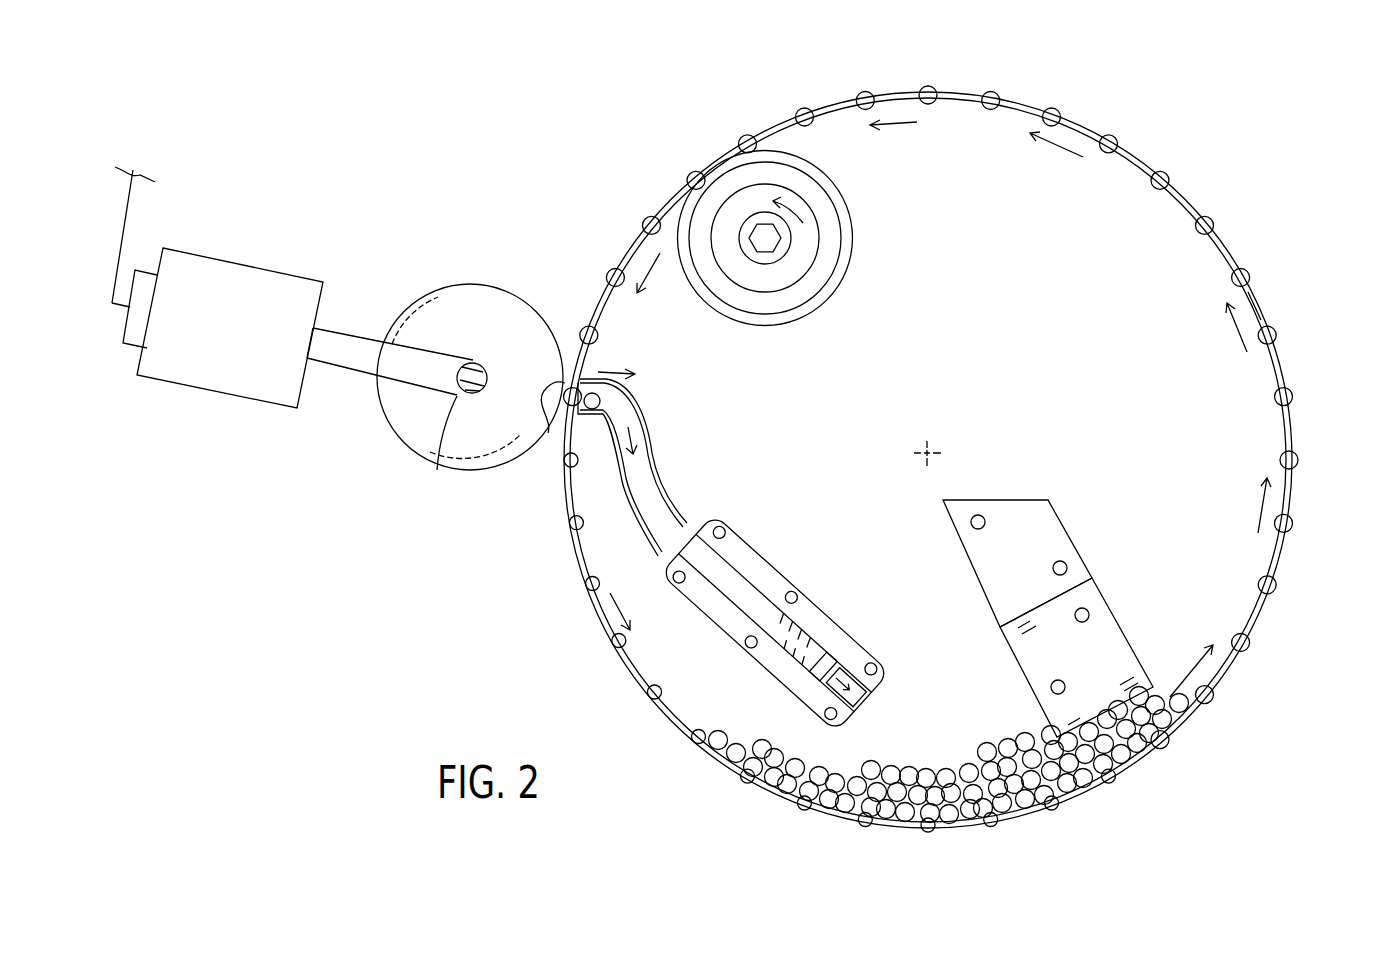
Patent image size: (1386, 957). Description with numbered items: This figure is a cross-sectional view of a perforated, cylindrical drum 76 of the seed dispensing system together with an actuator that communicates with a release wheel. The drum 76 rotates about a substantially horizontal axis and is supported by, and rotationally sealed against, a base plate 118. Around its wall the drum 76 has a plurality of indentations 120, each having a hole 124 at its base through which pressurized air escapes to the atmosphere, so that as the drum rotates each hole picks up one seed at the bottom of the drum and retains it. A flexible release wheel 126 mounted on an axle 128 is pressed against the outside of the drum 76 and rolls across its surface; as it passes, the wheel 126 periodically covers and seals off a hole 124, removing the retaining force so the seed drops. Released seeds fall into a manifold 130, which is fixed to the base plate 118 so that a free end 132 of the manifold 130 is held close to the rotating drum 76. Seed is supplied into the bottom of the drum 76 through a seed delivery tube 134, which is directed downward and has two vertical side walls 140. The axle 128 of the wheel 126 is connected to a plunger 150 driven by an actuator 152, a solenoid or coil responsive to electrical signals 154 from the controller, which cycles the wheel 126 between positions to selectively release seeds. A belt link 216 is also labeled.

The drum 76 is at (1187, 198).
The base plate 118 is at (1057, 337).
The indentations 120 is at (1298, 514).
The hole 124 is at (1300, 462).
The release wheel 126 is at (472, 283).
The axle 128 is at (437, 463).
The manifold 130 is at (652, 420).
The free end 132 is at (597, 357).
The seed delivery tube 134 is at (1038, 535).
The vertical side walls 140 is at (1097, 620).
The plunger 150 is at (337, 343).
The actuator 152 is at (243, 280).
The electrical signals 154 is at (123, 247).
The belt link 216 is at (1253, 293).